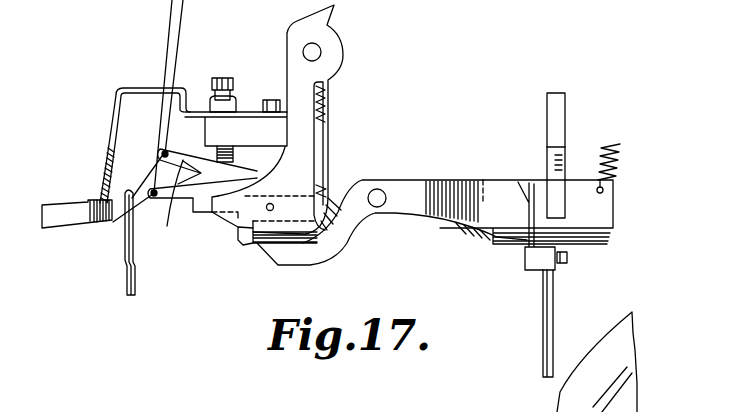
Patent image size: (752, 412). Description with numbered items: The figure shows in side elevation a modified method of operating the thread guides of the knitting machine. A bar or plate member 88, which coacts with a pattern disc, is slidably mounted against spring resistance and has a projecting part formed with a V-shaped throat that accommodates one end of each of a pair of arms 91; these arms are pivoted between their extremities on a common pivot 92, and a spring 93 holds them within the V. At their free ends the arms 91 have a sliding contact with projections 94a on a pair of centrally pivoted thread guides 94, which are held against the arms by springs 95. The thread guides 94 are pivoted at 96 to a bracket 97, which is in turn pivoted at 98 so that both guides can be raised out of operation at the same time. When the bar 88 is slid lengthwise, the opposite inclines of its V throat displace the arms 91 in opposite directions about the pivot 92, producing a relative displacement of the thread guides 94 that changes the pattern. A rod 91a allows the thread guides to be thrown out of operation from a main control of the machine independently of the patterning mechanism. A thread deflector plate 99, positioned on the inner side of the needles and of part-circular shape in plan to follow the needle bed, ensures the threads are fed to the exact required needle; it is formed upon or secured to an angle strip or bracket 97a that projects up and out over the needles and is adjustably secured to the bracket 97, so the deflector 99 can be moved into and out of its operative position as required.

The bar or plate member 88 is at (552, 113).
The pair of arms 91 is at (604, 220).
The rod 91a is at (547, 333).
The common pivot 92 is at (378, 207).
The spring 93 is at (600, 142).
The thread guides 94 is at (173, 192).
The projections 94a is at (240, 244).
The springs 95 is at (328, 115).
The pivot 96 is at (272, 204).
The bracket 97 is at (302, 168).
The angle strip or bracket 97a is at (125, 86).
The pivot 98 is at (321, 49).
The thread deflector plate 99 is at (68, 216).